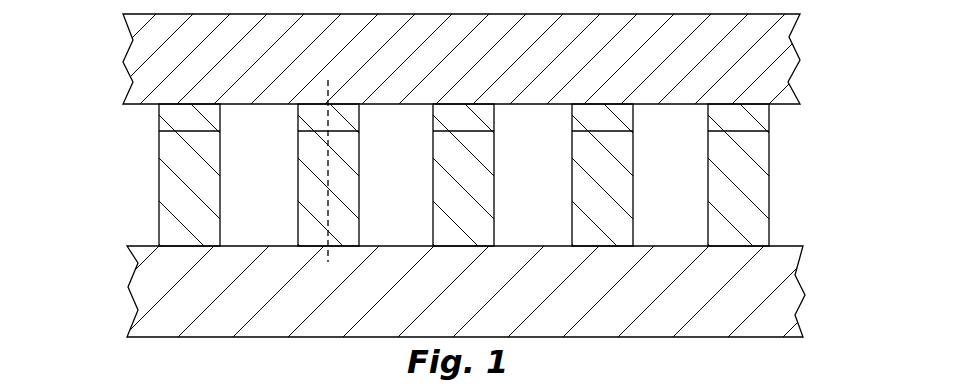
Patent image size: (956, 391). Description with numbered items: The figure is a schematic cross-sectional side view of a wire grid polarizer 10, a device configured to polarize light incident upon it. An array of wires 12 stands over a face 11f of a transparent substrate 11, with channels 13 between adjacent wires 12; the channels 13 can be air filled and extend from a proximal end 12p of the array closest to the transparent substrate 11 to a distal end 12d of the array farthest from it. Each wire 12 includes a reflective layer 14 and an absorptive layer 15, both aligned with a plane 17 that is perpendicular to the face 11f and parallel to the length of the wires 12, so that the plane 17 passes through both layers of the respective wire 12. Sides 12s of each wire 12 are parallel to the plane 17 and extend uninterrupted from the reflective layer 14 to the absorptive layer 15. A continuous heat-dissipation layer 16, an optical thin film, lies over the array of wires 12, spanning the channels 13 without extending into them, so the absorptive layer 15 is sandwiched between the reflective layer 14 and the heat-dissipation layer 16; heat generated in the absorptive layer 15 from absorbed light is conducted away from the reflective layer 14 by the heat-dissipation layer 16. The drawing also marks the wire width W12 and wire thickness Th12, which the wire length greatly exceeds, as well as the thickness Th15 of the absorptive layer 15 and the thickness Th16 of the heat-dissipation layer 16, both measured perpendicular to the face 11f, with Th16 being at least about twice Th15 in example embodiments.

The wire grid polarizer 10 is at (59, 268).
The transparent substrate 11 is at (475, 301).
The face of the transparent substrate 11f is at (147, 245).
The wires 12 is at (400, 184).
The distal end of the array of wires 12d is at (207, 100).
The proximal end of the array of wires 12p is at (189, 250).
The sides of the wires 12s is at (650, 158).
The channels 13 is at (464, 194).
The reflective layer 14 is at (203, 207).
The absorptive layer 15 is at (197, 130).
The heat-dissipation layer 16 is at (477, 69).
The plane 17 is at (326, 80).
The thickness of the heat-dissipation layer Th16 is at (600, 33).
The thickness of the absorptive layer Th15 is at (759, 163).
The wire thickness Th12 is at (797, 122).
The wire width W12 is at (657, 263).